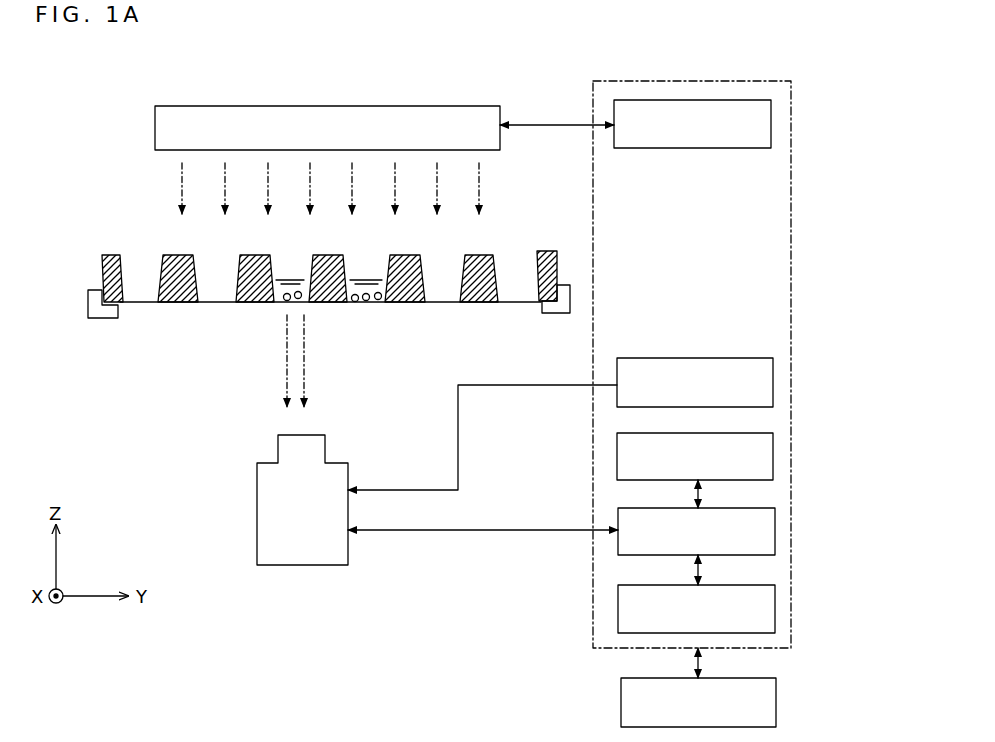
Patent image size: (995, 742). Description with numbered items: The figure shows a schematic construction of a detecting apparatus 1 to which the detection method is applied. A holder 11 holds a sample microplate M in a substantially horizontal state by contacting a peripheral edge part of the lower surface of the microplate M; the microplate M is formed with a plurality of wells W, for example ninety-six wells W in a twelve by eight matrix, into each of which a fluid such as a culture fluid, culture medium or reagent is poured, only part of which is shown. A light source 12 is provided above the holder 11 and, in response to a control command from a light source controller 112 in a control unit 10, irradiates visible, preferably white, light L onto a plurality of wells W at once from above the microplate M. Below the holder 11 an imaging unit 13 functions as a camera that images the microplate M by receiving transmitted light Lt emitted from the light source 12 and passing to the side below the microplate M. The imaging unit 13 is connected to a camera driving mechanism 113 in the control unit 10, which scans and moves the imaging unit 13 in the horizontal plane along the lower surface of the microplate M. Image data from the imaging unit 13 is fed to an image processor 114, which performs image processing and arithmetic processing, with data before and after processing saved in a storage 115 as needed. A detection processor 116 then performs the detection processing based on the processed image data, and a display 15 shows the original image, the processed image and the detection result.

The detecting apparatus 1 is at (118, 98).
The control unit 10 is at (650, 80).
The holder 11 is at (98, 318).
The light source 12 is at (320, 106).
The imaging unit 13 is at (257, 517).
The display 15 is at (621, 703).
The light source controller 112 is at (690, 148).
The camera driving mechanism 113 is at (676, 358).
The image processor 114 is at (618, 548).
The storage 115 is at (617, 467).
The detection processor 116 is at (618, 608).
The light L is at (182, 190).
The transmitted light Lt is at (305, 368).
The microplate M is at (110, 255).
The wells W is at (121, 292).